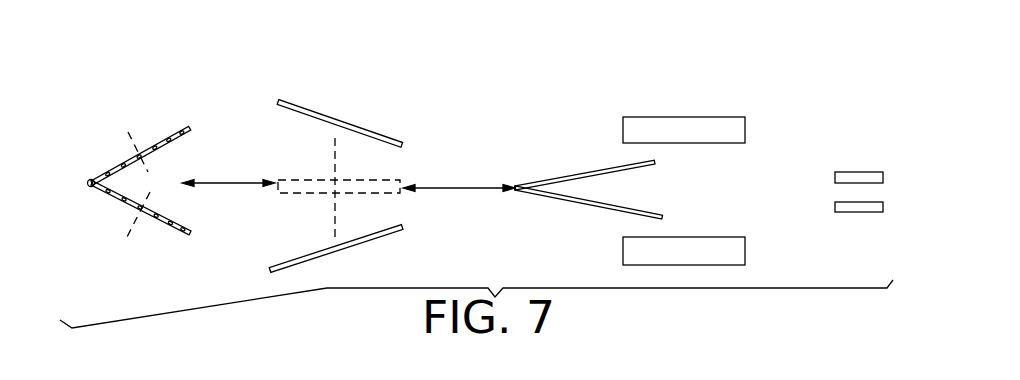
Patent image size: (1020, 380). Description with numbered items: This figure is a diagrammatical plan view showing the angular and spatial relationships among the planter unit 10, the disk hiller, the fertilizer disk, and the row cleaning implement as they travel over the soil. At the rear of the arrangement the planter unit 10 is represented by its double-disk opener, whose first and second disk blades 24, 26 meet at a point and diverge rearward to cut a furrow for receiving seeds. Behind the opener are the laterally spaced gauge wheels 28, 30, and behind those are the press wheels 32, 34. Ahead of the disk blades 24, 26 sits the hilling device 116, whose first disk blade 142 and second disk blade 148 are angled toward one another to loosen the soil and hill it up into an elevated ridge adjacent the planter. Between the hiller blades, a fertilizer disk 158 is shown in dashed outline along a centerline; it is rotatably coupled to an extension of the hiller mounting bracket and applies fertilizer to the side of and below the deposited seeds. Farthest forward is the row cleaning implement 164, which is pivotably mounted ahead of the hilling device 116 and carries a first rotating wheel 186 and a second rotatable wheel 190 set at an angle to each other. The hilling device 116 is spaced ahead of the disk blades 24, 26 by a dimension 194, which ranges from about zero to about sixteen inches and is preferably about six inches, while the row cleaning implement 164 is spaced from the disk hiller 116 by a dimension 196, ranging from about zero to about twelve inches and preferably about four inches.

The planter unit 10 is at (649, 78).
The first disk blade 24 is at (592, 208).
The second disk blade 26 is at (577, 172).
The gauge wheel 28 is at (735, 252).
The gauge wheel 30 is at (730, 130).
The press wheel 32 is at (860, 207).
The press wheel 34 is at (858, 178).
The hilling device 116 is at (256, 84).
The first disk blade 142 is at (402, 138).
The second disk blade 148 is at (388, 235).
The fertilizer disk 158 is at (316, 201).
The row cleaning implement 164 is at (105, 241).
The first rotating wheel 186 is at (148, 148).
The second rotatable wheel 190 is at (160, 227).
The dimension 194 is at (462, 192).
The dimension 196 is at (225, 182).